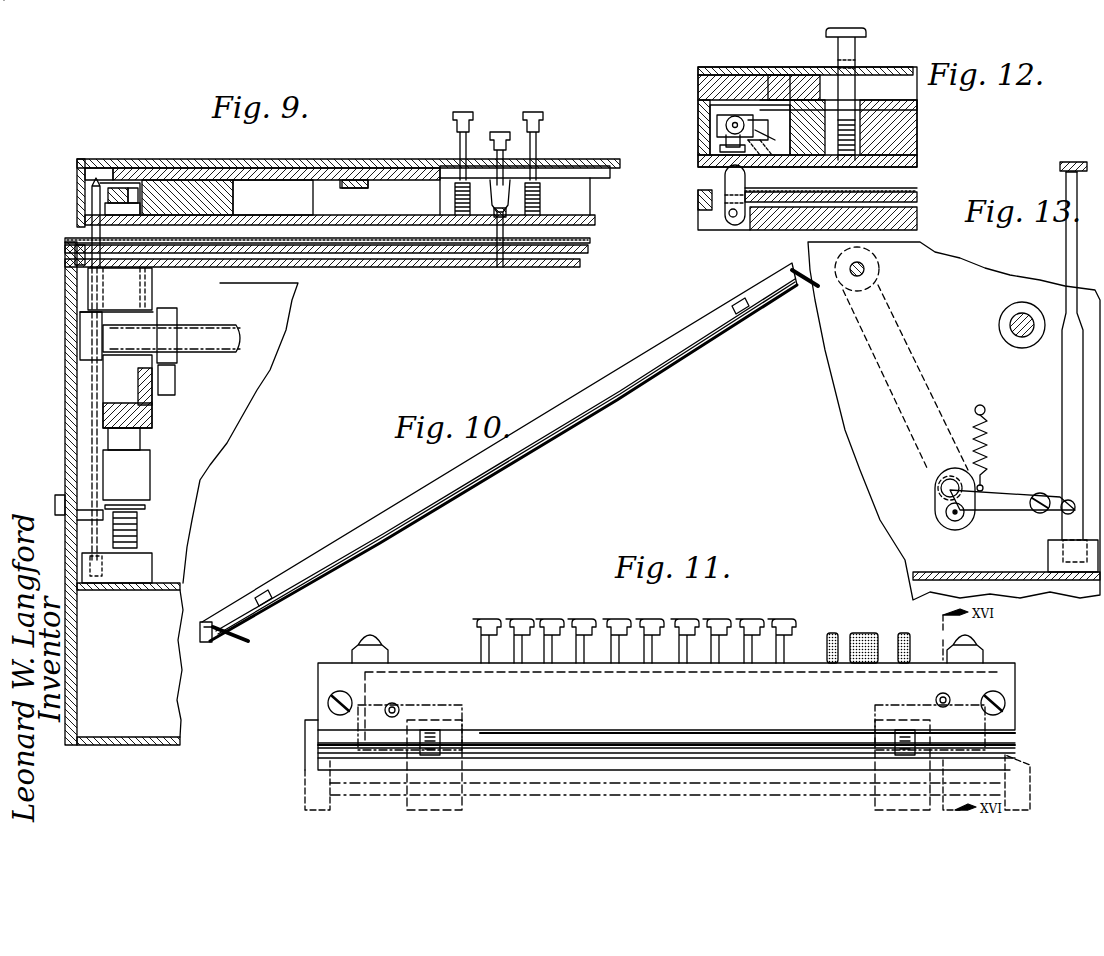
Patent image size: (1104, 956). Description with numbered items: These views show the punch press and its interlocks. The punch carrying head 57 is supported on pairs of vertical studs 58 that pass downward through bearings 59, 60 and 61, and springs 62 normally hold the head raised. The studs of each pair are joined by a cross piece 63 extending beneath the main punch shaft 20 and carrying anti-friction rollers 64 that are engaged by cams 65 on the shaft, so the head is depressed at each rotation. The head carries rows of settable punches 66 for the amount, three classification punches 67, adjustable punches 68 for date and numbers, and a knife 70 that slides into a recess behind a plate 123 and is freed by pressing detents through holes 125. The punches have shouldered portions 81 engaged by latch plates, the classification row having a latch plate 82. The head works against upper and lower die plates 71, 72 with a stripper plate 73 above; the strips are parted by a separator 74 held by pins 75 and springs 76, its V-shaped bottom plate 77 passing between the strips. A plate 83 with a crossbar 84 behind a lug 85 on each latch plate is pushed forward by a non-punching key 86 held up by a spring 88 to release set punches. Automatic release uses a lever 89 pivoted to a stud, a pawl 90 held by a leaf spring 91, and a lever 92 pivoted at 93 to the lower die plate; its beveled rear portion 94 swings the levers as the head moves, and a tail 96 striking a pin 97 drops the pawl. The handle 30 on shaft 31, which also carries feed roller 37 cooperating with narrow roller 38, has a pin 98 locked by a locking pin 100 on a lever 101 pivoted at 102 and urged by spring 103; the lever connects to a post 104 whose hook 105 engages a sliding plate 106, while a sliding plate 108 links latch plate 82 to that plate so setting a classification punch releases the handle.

In FIG. 9, the main punch shaft 20 is at (207, 348).
In FIG. 13, the handle 30 is at (920, 372).
In FIG. 11, the shaft 31 is at (660, 796).
In FIG. 13, the shaft 31 is at (865, 266).
In FIG. 11, the feed roller 37 is at (462, 803).
In FIG. 11, the narrow roller 38 is at (440, 732).
In FIG. 9, the punch carrying head 57 is at (240, 159).
In FIG. 11, the punch carrying head 57 is at (318, 687).
In FIG. 9, the vertical studs 58 is at (140, 438).
In FIG. 9, the bearing 59 is at (153, 297).
In FIG. 9, the bearing 60 is at (150, 472).
In FIG. 9, the bearing 61 is at (140, 572).
In FIG. 9, the springs 62 is at (137, 527).
In FIG. 9, the cross piece 63 is at (152, 410).
In FIG. 9, the anti-friction rollers 64 is at (175, 382).
In FIG. 9, the cams 65 is at (177, 316).
In FIG. 11, the settable punches 66 is at (580, 618).
In FIG. 9, the settable punches 67 is at (498, 132).
In FIG. 11, the semi-permanent adjustable punches 68 is at (902, 633).
In FIG. 11, the knife 70 is at (480, 734).
In FIG. 9, the upper die plate 71 is at (588, 247).
In FIG. 12, the upper die plate 71 is at (917, 197).
In FIG. 9, the lower die plate 72 is at (580, 262).
In FIG. 12, the lower die plate 72 is at (917, 217).
In FIG. 9, the stripper plate 73 is at (590, 238).
In FIG. 12, the stripper plate 73 is at (917, 188).
In FIG. 10, the separator 74 is at (428, 492).
In FIG. 10, the pins 75 is at (252, 640).
In FIG. 9, the springs 76 is at (455, 197).
In FIG. 10, the bottom plate 77 is at (418, 532).
In FIG. 9, the shouldered portions 81 is at (520, 175).
In FIG. 9, the latch plate 82 is at (592, 178).
In FIG. 12, the plate 83 is at (770, 118).
In FIG. 9, the crossbar 84 is at (356, 188).
In FIG. 9, the lug 85 is at (358, 178).
In FIG. 12, the non-punching key 86 is at (862, 33).
In FIG. 12, the spring 88 is at (856, 140).
In FIG. 9, the lever 89 is at (118, 205).
In FIG. 12, the lever 89 is at (717, 122).
In FIG. 12, the pawl 90 is at (760, 140).
In FIG. 12, the leaf spring 91 is at (768, 160).
In FIG. 12, the lever 92 is at (748, 160).
In FIG. 12, the pivot 93 is at (729, 214).
In FIG. 12, the beveled rear portion 94 is at (726, 178).
In FIG. 12, the tail 96 is at (726, 140).
In FIG. 12, the pin 97 is at (720, 149).
In FIG. 13, the pin 98 is at (955, 522).
In FIG. 9, the locking pin 100 is at (62, 495).
In FIG. 13, the locking pin 100 is at (938, 487).
In FIG. 9, the lever 101 is at (100, 515).
In FIG. 13, the lever 101 is at (997, 490).
In FIG. 13, the pivot 102 is at (1040, 513).
In FIG. 13, the spring 103 is at (990, 440).
In FIG. 9, the post 104 is at (97, 388).
In FIG. 13, the post 104 is at (1062, 375).
In FIG. 9, the hook 105 is at (92, 185).
In FIG. 13, the hook 105 is at (1066, 178).
In FIG. 9, the sliding plate 106 is at (127, 188).
In FIG. 13, the sliding plate 106 is at (1072, 162).
In FIG. 9, the sliding plate 108 is at (268, 180).
In FIG. 11, the plate 123 is at (480, 675).
In FIG. 11, the holes 125 is at (393, 703).